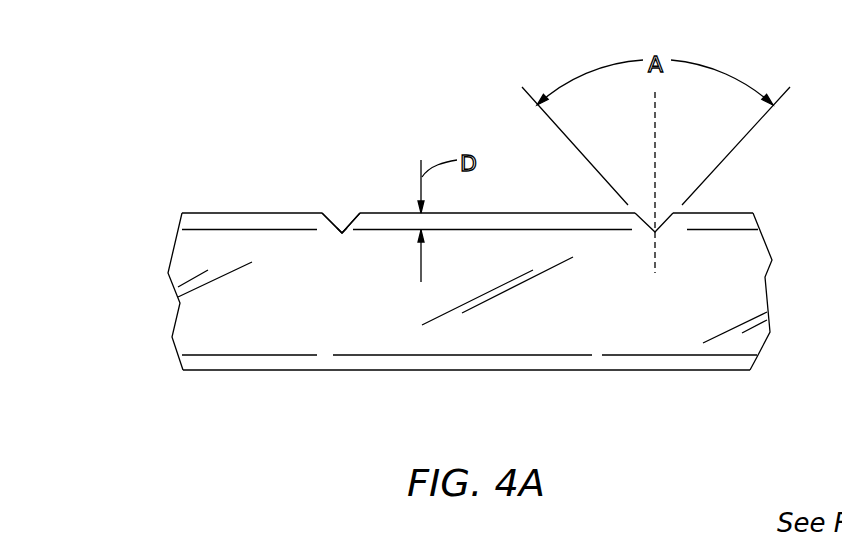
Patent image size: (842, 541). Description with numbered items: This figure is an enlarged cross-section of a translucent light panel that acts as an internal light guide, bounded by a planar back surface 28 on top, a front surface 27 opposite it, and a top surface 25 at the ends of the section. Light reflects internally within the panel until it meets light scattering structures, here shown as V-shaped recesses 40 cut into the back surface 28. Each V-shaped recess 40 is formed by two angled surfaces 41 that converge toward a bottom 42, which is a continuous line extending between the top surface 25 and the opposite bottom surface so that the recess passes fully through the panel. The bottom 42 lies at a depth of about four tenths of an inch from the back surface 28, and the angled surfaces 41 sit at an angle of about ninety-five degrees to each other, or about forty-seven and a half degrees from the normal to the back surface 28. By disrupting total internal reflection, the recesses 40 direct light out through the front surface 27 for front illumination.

The top surface 25 is at (222, 327).
The front surface 27 is at (258, 372).
The back surface 28 is at (252, 212).
The V-shaped recess 40 is at (340, 193).
The angled surface 41 is at (332, 213).
The bottom 42 is at (342, 236).